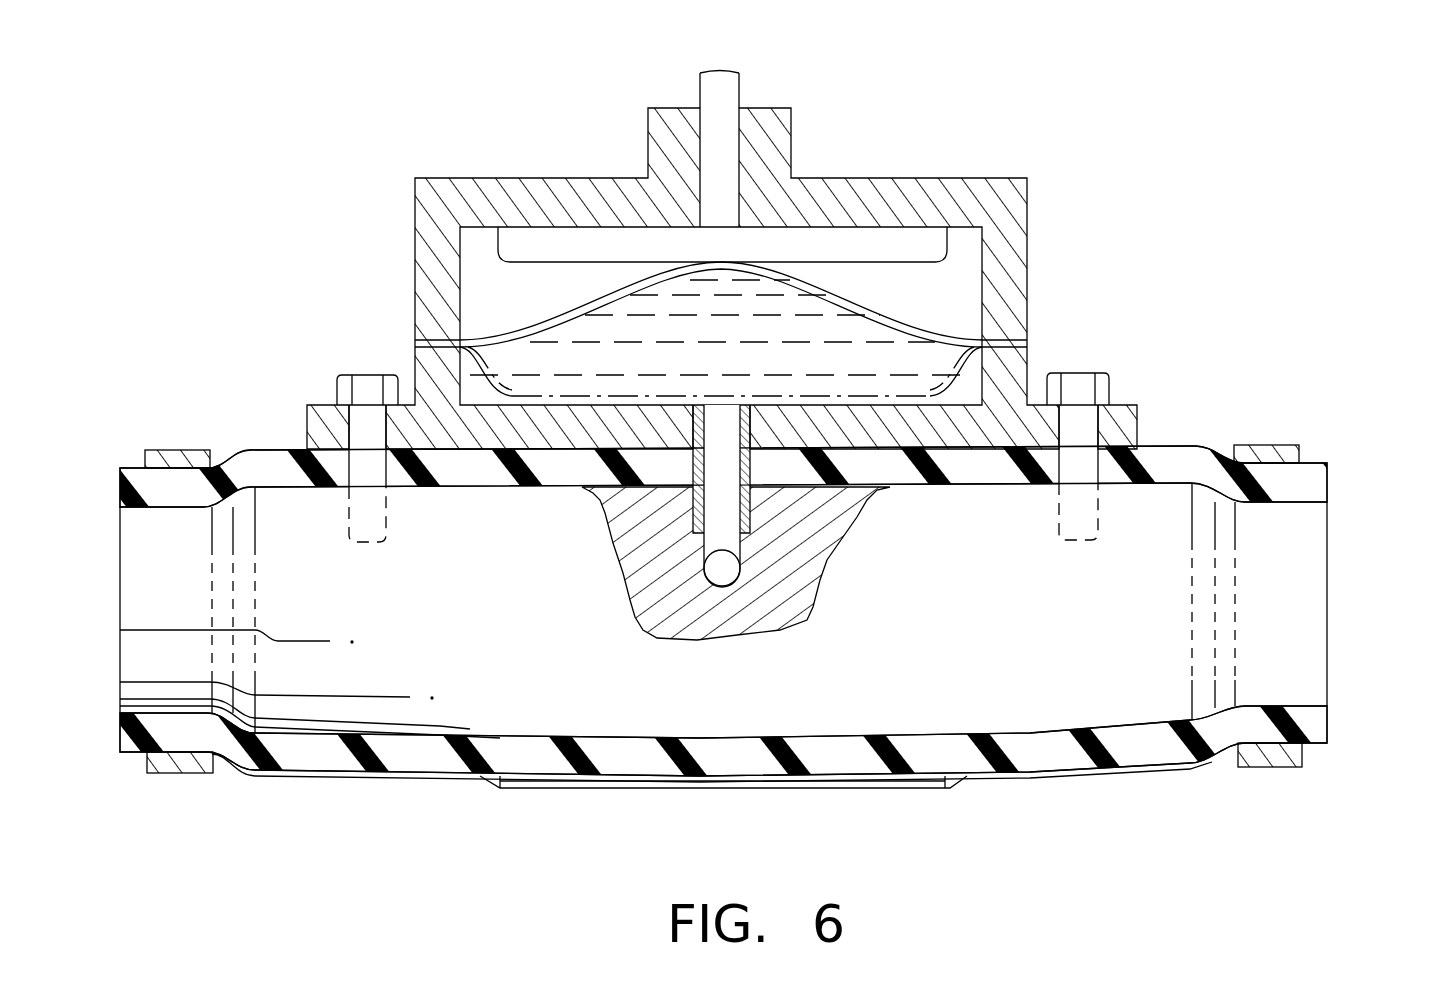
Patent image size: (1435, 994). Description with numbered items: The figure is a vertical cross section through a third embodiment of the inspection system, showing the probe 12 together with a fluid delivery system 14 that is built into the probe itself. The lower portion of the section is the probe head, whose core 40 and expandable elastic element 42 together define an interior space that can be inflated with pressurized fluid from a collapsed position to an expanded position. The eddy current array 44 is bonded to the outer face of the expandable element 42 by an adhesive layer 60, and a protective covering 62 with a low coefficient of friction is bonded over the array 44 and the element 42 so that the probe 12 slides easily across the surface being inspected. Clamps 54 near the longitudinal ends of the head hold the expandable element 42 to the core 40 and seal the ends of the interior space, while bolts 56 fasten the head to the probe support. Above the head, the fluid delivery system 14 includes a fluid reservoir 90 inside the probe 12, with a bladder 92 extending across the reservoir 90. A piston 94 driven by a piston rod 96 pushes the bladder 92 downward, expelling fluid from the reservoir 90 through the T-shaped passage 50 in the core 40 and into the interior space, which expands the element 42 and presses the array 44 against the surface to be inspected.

The probe 12 is at (383, 800).
The fluid delivery system 14 is at (1138, 112).
The core 40 is at (1330, 606).
The expandable elastic element 42 is at (1330, 720).
The eddy current array 44 is at (840, 781).
The T-shaped passage 50 is at (734, 563).
The clamps 54 is at (178, 450).
The bolts 56 is at (364, 374).
The adhesive layer 60 is at (655, 781).
The protective covering 62 is at (1085, 778).
The fluid reservoir 90 is at (1030, 238).
The bladder 92 is at (882, 308).
The piston 94 is at (822, 258).
The piston rod 96 is at (741, 90).